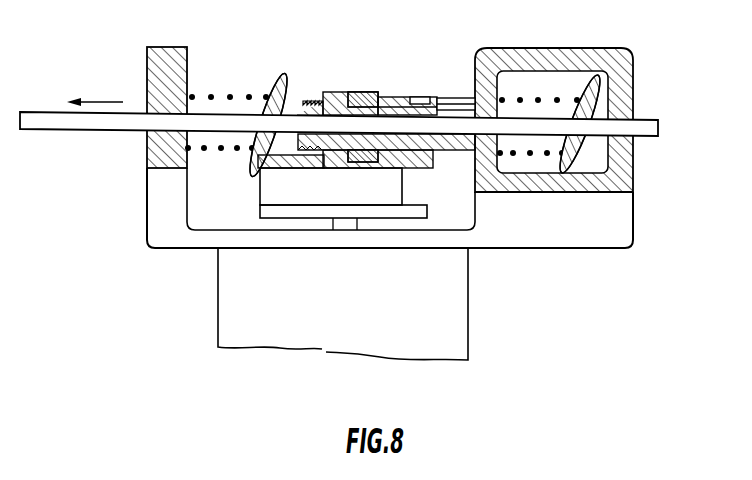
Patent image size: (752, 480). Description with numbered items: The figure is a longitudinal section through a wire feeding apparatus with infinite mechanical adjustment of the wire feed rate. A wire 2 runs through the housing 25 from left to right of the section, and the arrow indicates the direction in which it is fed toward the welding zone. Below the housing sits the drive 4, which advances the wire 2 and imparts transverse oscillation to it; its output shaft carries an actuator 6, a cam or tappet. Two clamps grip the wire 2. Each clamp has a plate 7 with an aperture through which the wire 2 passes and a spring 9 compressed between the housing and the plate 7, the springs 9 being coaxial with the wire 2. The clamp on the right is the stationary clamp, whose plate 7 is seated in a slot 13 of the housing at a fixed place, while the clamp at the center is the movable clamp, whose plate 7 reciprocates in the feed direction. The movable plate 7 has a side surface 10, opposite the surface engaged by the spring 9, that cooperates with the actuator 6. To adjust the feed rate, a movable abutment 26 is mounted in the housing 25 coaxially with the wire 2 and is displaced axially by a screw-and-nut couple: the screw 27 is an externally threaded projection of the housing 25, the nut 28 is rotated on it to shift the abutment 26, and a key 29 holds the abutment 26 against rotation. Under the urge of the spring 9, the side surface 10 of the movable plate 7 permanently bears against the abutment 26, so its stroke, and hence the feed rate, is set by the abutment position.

The wire 2 is at (60, 122).
The drive 4 is at (323, 340).
The actuator 6 is at (277, 199).
The plate 7 is at (254, 176).
The spring 9 is at (203, 151).
The side surface 10 is at (287, 164).
The slot 13 is at (554, 80).
The housing 25 is at (178, 68).
The movable abutment 26 is at (337, 92).
The screw 27 is at (303, 99).
The nut 28 is at (368, 92).
The key 29 is at (418, 97).